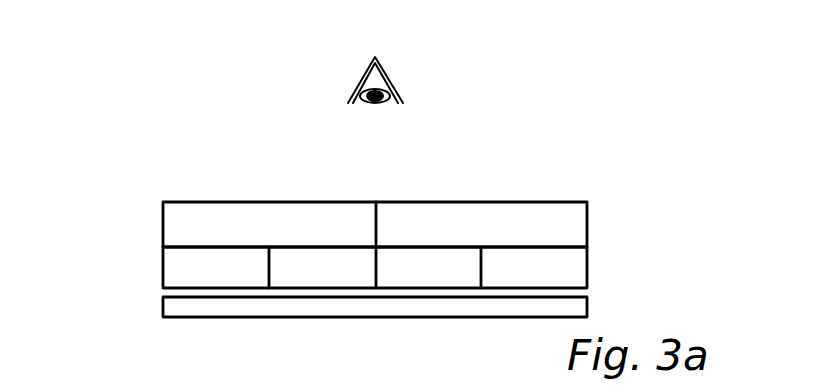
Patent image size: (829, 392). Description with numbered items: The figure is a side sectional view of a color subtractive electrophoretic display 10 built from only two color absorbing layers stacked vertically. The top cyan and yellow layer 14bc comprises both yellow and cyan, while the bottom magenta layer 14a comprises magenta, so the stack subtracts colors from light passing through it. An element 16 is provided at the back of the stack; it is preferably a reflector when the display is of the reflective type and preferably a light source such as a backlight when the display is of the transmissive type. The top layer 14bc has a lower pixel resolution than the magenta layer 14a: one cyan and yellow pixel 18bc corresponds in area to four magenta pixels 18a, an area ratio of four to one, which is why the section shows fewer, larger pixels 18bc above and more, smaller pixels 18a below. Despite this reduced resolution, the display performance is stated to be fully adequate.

The color subtractive electrophoretic display 10 is at (395, 239).
The top cyan and yellow layer 14bc is at (308, 196).
The bottom magenta layer 14a is at (314, 218).
The cyan and yellow pixel 18bc is at (267, 224).
The magenta pixel 18a is at (197, 262).
The element 16 is at (587, 303).